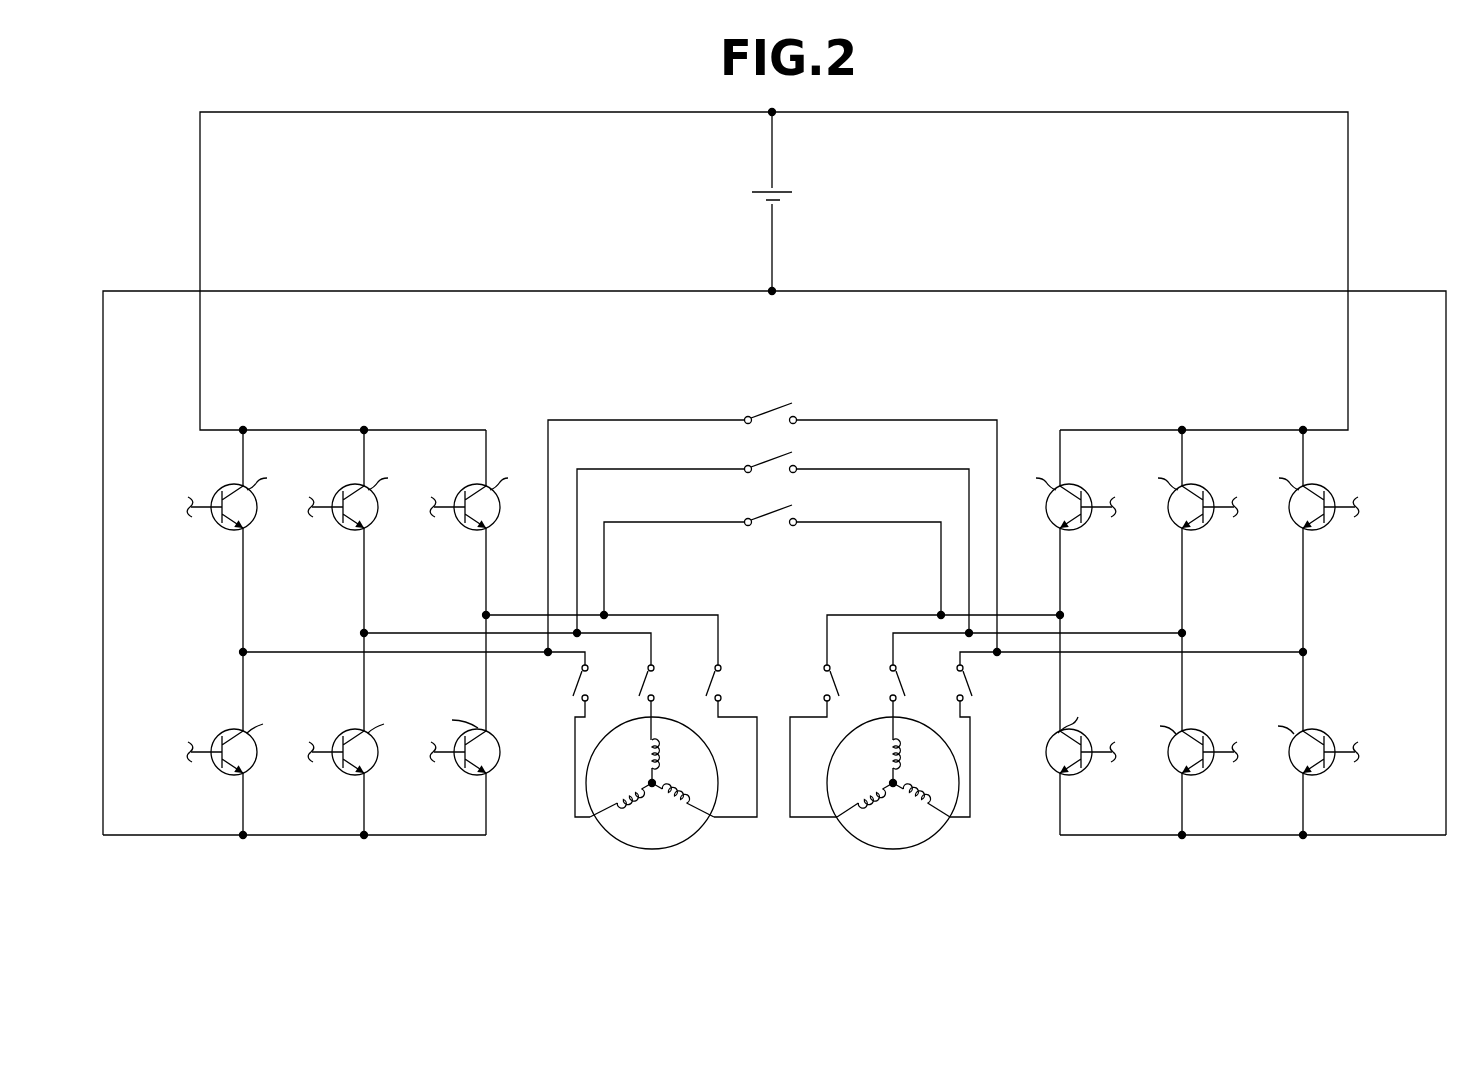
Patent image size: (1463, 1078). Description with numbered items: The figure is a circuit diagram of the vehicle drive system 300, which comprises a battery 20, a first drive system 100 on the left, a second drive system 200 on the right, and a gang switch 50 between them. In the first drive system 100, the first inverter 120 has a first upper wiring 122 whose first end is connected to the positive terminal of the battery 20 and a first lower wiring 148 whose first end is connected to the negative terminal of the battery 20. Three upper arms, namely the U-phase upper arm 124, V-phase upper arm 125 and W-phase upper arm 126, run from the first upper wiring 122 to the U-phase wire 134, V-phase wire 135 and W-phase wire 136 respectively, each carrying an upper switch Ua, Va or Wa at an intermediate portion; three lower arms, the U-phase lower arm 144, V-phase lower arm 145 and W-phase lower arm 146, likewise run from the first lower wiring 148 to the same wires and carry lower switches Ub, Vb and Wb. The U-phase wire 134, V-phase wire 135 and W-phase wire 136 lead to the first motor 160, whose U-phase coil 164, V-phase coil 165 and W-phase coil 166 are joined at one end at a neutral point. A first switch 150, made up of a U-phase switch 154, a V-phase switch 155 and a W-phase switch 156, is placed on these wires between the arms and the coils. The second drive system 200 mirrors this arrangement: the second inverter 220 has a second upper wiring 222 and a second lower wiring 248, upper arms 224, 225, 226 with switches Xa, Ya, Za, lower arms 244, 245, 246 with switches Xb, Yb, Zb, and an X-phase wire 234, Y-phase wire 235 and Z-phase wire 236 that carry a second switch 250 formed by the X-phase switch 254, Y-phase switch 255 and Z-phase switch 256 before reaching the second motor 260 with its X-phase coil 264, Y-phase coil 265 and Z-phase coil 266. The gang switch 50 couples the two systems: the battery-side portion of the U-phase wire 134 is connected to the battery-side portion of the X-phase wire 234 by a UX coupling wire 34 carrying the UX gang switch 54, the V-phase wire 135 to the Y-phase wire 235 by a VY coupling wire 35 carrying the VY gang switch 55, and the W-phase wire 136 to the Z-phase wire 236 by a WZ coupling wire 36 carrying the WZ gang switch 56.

The vehicle drive system 300 is at (1262, 105).
The battery 20 is at (784, 193).
The first drive system 100 is at (147, 283).
The second drive system 200 is at (1398, 283).
The first upper wiring 122 is at (203, 365).
The second upper wiring 222 is at (1345, 364).
The first lower wiring 148 is at (130, 838).
The second lower wiring 248 is at (1415, 838).
The first inverter 120 is at (348, 680).
The second inverter 220 is at (1197, 680).
The U-phase upper arm 124 is at (243, 558).
The V-phase upper arm 125 is at (364, 558).
The W-phase upper arm 126 is at (486, 558).
The U-phase lower arm 144 is at (243, 804).
The V-phase lower arm 145 is at (364, 804).
The W-phase lower arm 146 is at (486, 804).
The X-phase upper arm 224 is at (1305, 557).
The Y-phase upper arm 225 is at (1184, 557).
The Z-phase upper arm 226 is at (1062, 557).
The X-phase lower arm 244 is at (1305, 803).
The Y-phase lower arm 245 is at (1184, 803).
The Z-phase lower arm 246 is at (1062, 803).
The U-phase wire 134 is at (318, 649).
The V-phase wire 135 is at (437, 630).
The W-phase wire 136 is at (520, 612).
The X-phase wire 234 is at (1225, 651).
The Y-phase wire 235 is at (1128, 620).
The Z-phase wire 236 is at (1023, 612).
The UX coupling wire 34 is at (690, 415).
The VY coupling wire 35 is at (690, 464).
The WZ coupling wire 36 is at (690, 514).
The gang switch 50 is at (772, 489).
The UX gang switch 54 is at (774, 408).
The VY gang switch 55 is at (774, 459).
The WZ gang switch 56 is at (774, 511).
The first switch 150 is at (632, 730).
The U-phase switch 154 is at (576, 680).
The V-phase switch 155 is at (639, 684).
The W-phase switch 156 is at (705, 684).
The first motor 160 is at (651, 811).
The U-phase coil 164 is at (612, 833).
The V-phase coil 165 is at (646, 748).
The W-phase coil 166 is at (698, 833).
The second switch 250 is at (914, 730).
The X-phase switch 254 is at (998, 682).
The Y-phase switch 255 is at (905, 684).
The Z-phase switch 256 is at (840, 685).
The second motor 260 is at (894, 811).
The X-phase coil 264 is at (932, 833).
The Y-phase coil 265 is at (897, 750).
The Z-phase coil 266 is at (850, 833).